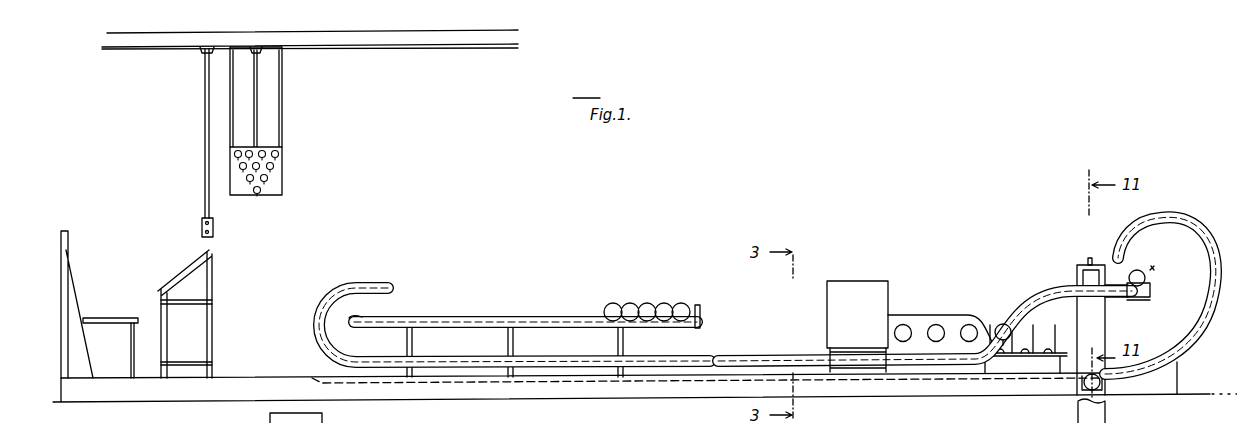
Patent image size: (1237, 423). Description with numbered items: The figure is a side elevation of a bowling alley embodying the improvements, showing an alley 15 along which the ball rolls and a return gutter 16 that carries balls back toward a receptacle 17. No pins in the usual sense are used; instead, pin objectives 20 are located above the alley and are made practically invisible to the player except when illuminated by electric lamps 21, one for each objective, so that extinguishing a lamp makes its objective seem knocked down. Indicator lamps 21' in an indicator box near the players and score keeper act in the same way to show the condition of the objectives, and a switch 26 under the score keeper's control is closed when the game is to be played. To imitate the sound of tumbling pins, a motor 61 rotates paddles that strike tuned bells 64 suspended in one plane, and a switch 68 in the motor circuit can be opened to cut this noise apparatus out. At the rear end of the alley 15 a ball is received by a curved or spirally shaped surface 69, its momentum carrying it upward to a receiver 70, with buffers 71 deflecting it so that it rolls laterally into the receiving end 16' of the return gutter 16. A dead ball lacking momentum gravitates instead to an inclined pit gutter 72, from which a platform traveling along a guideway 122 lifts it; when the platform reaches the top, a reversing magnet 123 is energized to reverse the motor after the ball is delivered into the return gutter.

The indicator lamps 21' is at (276, 121).
The switch 68 is at (214, 226).
The switch 26 is at (200, 236).
The alley 15 is at (590, 378).
The receptacle 17 is at (473, 317).
The return gutter 16 is at (725, 355).
The receiving end of return gutter 16' is at (1120, 307).
The motor 61 is at (835, 338).
The bells 64 is at (916, 318).
The pin objectives 20 is at (1020, 328).
The electric lamps 21 is at (1023, 374).
The guideway 122 is at (1082, 329).
The reversing magnet 123 is at (1094, 414).
The pit gutter 72 is at (1082, 396).
The curved or spirally shaped surface 69 is at (1167, 232).
The receiver 70 is at (1152, 292).
The buffers 71 is at (1146, 272).